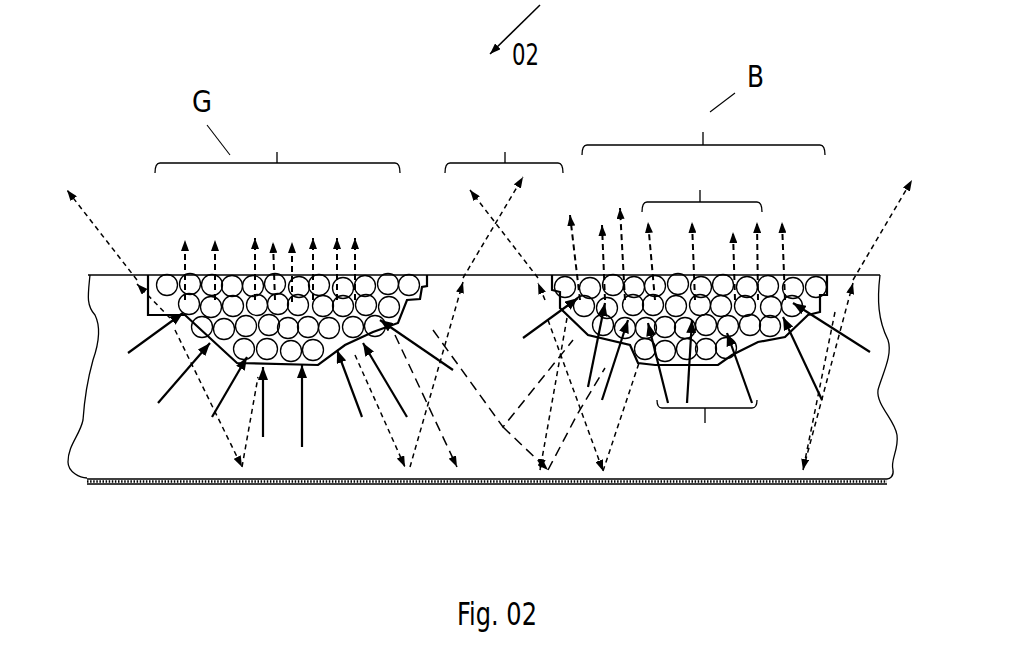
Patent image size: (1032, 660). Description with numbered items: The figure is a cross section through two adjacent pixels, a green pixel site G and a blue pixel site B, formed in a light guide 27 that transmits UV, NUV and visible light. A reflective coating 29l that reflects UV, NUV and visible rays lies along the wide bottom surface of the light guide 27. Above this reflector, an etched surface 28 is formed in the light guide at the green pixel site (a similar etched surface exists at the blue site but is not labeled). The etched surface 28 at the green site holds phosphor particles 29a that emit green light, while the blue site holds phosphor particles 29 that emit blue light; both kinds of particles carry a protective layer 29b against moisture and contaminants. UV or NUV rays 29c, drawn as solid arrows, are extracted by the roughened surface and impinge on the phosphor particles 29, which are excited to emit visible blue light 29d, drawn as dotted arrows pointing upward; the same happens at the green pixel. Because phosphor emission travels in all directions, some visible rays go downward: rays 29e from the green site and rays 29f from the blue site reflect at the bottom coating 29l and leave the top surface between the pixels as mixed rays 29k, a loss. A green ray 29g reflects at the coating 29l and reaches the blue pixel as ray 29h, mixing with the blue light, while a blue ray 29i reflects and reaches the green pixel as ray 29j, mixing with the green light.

The light guide 27 is at (85, 327).
The etched surface 28 is at (240, 335).
The phosphor particles 29 is at (806, 290).
The phosphor particles 29a is at (383, 285).
The protective layer 29b is at (820, 290).
The UV or NUV rays 29c is at (708, 424).
The visible blue light 29d is at (665, 196).
The visible rays 29e is at (375, 425).
The visible rays 29f is at (617, 450).
The ray of green light 29g is at (443, 433).
The ray 29h is at (498, 453).
The blue light ray 29i is at (562, 445).
The ray 29j is at (493, 435).
The rays emerging between the pixels 29k is at (523, 155).
The reflective coating 29l is at (178, 485).